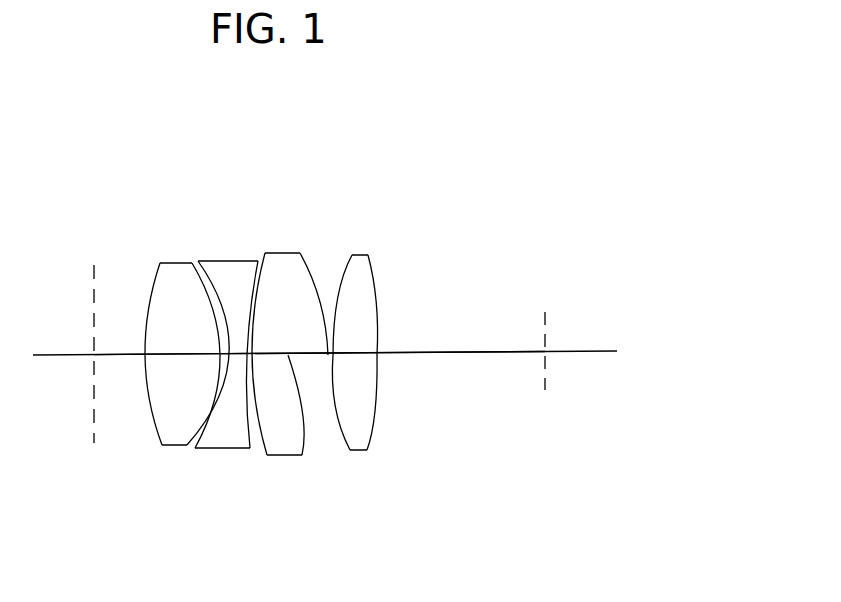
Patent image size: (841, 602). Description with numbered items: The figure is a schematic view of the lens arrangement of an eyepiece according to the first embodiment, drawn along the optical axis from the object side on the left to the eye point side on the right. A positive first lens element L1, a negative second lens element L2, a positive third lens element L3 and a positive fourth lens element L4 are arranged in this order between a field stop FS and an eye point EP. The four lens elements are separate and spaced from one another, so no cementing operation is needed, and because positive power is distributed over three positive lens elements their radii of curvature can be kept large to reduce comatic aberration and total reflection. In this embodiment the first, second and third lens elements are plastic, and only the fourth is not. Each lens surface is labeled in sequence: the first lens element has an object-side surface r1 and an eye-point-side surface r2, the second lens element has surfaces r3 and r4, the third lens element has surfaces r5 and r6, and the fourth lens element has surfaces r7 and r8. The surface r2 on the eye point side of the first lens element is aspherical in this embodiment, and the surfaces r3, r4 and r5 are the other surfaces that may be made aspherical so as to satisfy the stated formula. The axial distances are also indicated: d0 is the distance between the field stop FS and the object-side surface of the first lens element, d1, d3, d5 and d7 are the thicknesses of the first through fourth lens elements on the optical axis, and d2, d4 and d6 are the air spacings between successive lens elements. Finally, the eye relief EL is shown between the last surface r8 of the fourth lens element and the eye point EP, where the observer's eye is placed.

The positive first lens element L1 is at (181, 259).
The negative second lens element L2 is at (239, 259).
The positive third lens element L3 is at (300, 263).
The positive fourth lens element L4 is at (400, 260).
The object-side surface of first lens element r1 is at (160, 263).
The eye-point-side surface of first lens element r2 is at (191, 268).
The object-side surface of second lens element r3 is at (195, 268).
The eye-point-side surface of second lens element r4 is at (258, 262).
The object-side surface of third lens element r5 is at (287, 260).
The eye-point-side surface of third lens element r6 is at (300, 253).
The object-side surface of fourth lens element r7 is at (352, 258).
The eye-point-side surface of fourth lens element r8 is at (369, 256).
The distance between field stop and first lens element d0 is at (130, 357).
The thickness of first lens element d1 is at (183, 357).
The distance between first and second lens elements d2 is at (242, 357).
The thickness of second lens element d3 is at (250, 400).
The distance between second and third lens elements d4 is at (267, 455).
The thickness of third lens element d5 is at (327, 357).
The distance between third and fourth lens elements d6 is at (328, 360).
The thickness of fourth lens element d7 is at (374, 357).
The field stop FS is at (94, 443).
The eye relief EL is at (458, 353).
The eye point EP is at (545, 390).